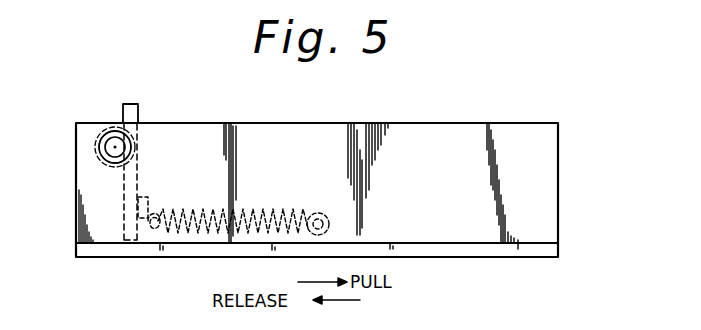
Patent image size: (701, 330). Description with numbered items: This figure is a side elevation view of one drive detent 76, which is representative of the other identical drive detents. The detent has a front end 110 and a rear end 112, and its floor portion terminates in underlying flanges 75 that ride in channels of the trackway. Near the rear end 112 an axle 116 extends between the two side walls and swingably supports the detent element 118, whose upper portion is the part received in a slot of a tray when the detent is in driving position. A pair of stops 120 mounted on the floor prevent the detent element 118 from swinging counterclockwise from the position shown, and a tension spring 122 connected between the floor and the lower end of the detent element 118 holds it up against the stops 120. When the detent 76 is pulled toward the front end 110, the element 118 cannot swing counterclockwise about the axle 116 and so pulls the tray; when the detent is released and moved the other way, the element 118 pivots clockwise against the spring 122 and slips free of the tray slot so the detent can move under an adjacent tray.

The front end 110 is at (558, 143).
The rear end 112 is at (76, 223).
The axle 116 is at (113, 141).
The detent element 118 is at (128, 185).
The stops 120 is at (128, 216).
The tension spring 122 is at (240, 213).
The underlying flanges 75 is at (447, 243).
The detent 76 is at (561, 222).